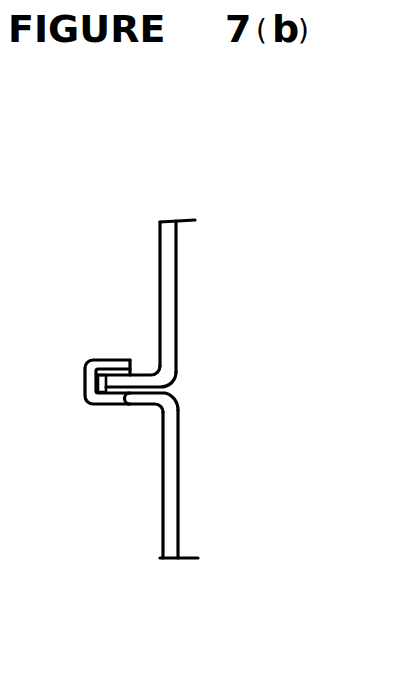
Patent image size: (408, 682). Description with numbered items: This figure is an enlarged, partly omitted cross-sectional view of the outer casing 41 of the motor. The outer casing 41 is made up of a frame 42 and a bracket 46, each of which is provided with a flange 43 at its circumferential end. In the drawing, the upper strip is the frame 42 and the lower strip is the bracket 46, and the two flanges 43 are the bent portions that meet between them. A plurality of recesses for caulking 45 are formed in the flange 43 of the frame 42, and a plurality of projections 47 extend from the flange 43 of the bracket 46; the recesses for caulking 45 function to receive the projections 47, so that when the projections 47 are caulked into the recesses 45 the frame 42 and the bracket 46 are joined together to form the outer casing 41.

The outer casing 41 is at (160, 280).
The frame 42 is at (176, 268).
The flange 43 is at (158, 366).
The recess for caulking 45 is at (106, 401).
The bracket 46 is at (163, 470).
The projection 47 is at (100, 360).